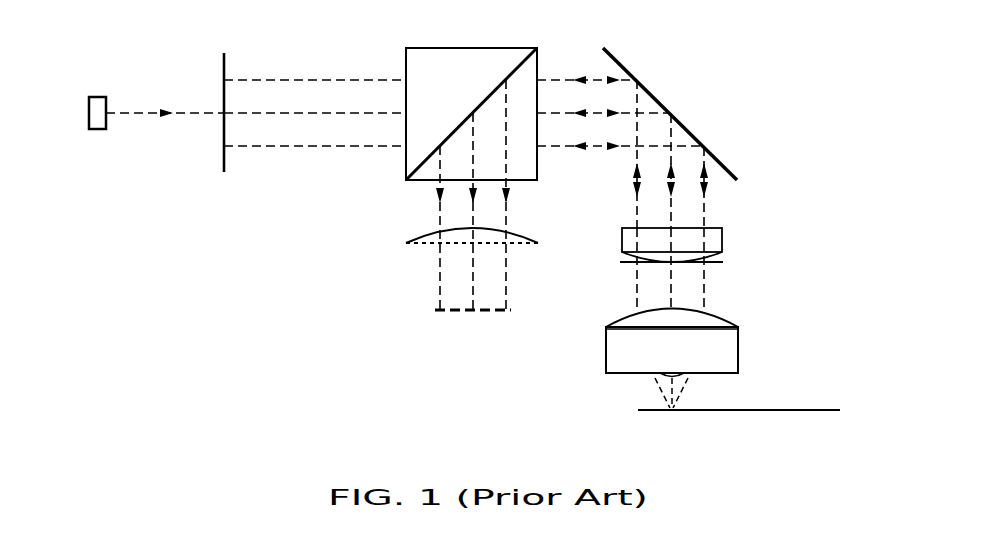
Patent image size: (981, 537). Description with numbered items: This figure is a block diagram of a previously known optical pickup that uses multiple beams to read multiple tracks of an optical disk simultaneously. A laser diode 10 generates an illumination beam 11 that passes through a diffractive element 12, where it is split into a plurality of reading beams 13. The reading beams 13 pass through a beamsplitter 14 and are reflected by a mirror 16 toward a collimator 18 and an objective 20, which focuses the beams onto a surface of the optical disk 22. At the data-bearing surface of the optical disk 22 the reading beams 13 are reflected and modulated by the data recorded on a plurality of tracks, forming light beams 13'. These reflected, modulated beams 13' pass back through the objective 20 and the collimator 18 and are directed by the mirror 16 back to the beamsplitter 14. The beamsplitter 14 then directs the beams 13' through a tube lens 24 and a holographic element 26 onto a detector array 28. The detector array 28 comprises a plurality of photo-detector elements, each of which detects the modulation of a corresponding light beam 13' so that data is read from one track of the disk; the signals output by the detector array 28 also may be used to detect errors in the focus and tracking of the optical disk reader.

The laser diode 10 is at (97, 97).
The illumination beam 11 is at (130, 112).
The diffractive element 12 is at (224, 163).
The reading beams 13 is at (499, 127).
The light beams 13' is at (469, 107).
The beamsplitter 14 is at (500, 47).
The mirror 16 is at (630, 70).
The collimator 18 is at (723, 238).
The objective 20 is at (740, 343).
The optical disk 22 is at (728, 410).
The tube lens 24 is at (420, 233).
The holographic element 26 is at (513, 247).
The detector array 28 is at (457, 312).